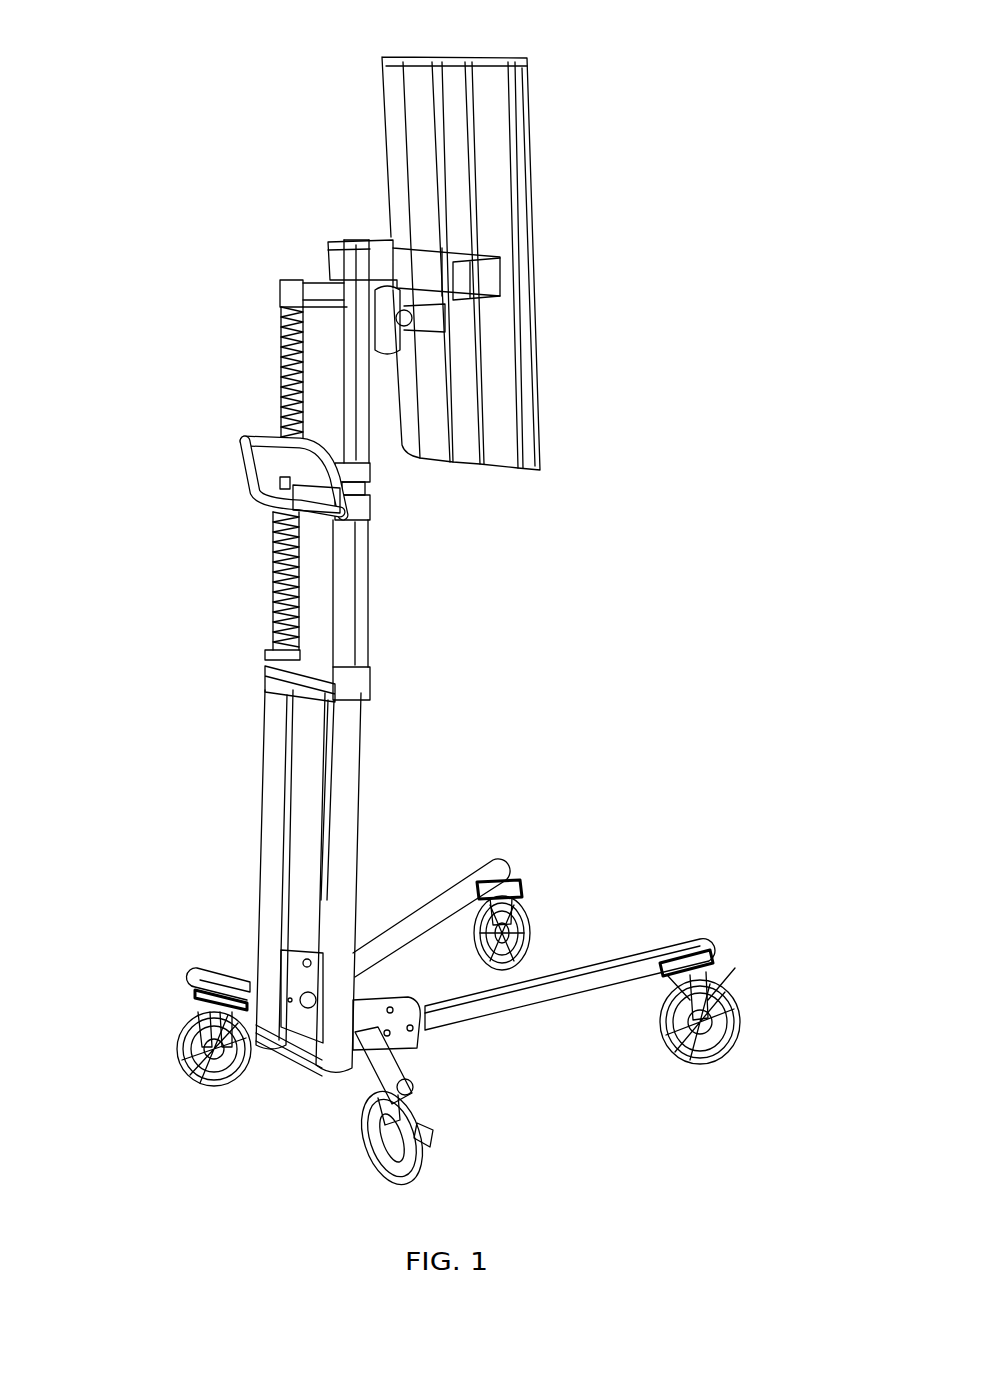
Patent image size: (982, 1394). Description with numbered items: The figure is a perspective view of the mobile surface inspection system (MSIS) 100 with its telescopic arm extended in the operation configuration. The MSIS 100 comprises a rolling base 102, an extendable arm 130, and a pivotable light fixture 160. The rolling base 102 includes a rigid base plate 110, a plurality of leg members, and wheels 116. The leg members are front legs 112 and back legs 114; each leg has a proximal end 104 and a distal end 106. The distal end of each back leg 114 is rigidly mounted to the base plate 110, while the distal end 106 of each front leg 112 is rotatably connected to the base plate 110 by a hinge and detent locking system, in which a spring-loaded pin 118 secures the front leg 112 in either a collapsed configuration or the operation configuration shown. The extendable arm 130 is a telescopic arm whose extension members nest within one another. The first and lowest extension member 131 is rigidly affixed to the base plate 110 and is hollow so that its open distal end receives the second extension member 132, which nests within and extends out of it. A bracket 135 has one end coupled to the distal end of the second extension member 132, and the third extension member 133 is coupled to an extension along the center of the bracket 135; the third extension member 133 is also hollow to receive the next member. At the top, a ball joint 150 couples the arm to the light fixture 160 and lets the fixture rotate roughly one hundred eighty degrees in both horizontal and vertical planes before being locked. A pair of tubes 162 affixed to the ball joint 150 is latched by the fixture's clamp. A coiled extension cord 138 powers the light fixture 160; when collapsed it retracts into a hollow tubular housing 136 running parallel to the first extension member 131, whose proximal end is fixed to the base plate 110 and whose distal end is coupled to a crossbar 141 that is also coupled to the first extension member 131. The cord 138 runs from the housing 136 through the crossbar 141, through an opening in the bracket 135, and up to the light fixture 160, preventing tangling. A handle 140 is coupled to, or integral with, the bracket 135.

The mobile surface inspection system 100 is at (172, 155).
The rolling base 102 is at (587, 860).
The proximal end 104 is at (667, 953).
The distal end 106 is at (440, 1015).
The base plate 110 is at (262, 1050).
The front leg 112 is at (487, 1007).
The back leg 114 is at (193, 973).
The wheel 116 is at (173, 1040).
The spring-loaded pin 118 is at (420, 1043).
The extendable arm 130 is at (374, 830).
The first extension member 131 is at (348, 778).
The second extension member 132 is at (360, 618).
The third extension member 133 is at (360, 437).
The bracket 135 is at (371, 507).
The tubular housing 136 is at (276, 791).
The extension cord 138 is at (270, 592).
The handle 140 is at (243, 447).
The crossbar 141 is at (253, 668).
The ball joint 150 is at (388, 322).
The light fixture 160 is at (535, 152).
The tubes 162 is at (462, 318).